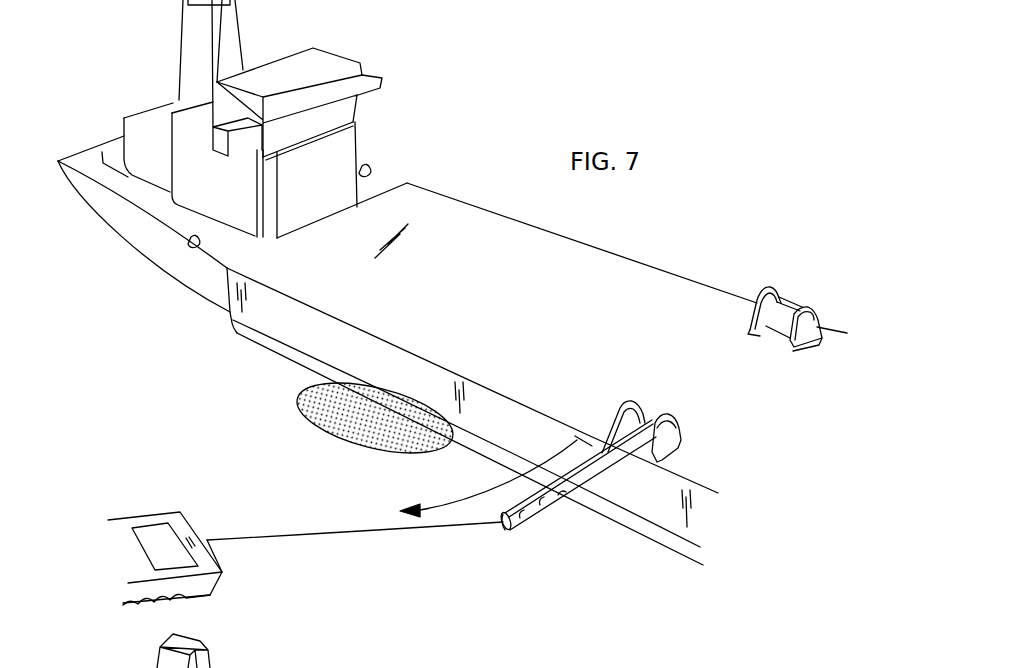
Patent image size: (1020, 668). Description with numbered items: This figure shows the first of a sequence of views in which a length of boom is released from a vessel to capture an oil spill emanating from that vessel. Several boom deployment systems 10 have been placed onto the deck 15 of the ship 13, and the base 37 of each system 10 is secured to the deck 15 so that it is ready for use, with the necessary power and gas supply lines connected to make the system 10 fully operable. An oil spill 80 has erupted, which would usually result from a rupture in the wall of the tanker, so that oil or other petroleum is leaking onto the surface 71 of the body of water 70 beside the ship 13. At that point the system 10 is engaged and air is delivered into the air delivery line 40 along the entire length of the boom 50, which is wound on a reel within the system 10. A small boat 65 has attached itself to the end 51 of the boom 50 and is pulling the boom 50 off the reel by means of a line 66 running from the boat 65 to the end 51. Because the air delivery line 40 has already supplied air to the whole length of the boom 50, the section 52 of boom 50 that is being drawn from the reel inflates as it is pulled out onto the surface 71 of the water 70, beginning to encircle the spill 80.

The ship 13 is at (93, 285).
The deck 15 is at (464, 280).
The system 10 is at (742, 319).
The base 37 is at (680, 447).
The section of boom 52 is at (592, 437).
The boom 50 is at (565, 500).
The air delivery line 40 is at (511, 530).
The line 66 is at (280, 528).
The small boat 65 is at (123, 543).
The end of boom 51 is at (217, 543).
The oil spill 80 is at (338, 428).
The surface of the body of water 71 is at (248, 424).
The body of water 70 is at (419, 491).